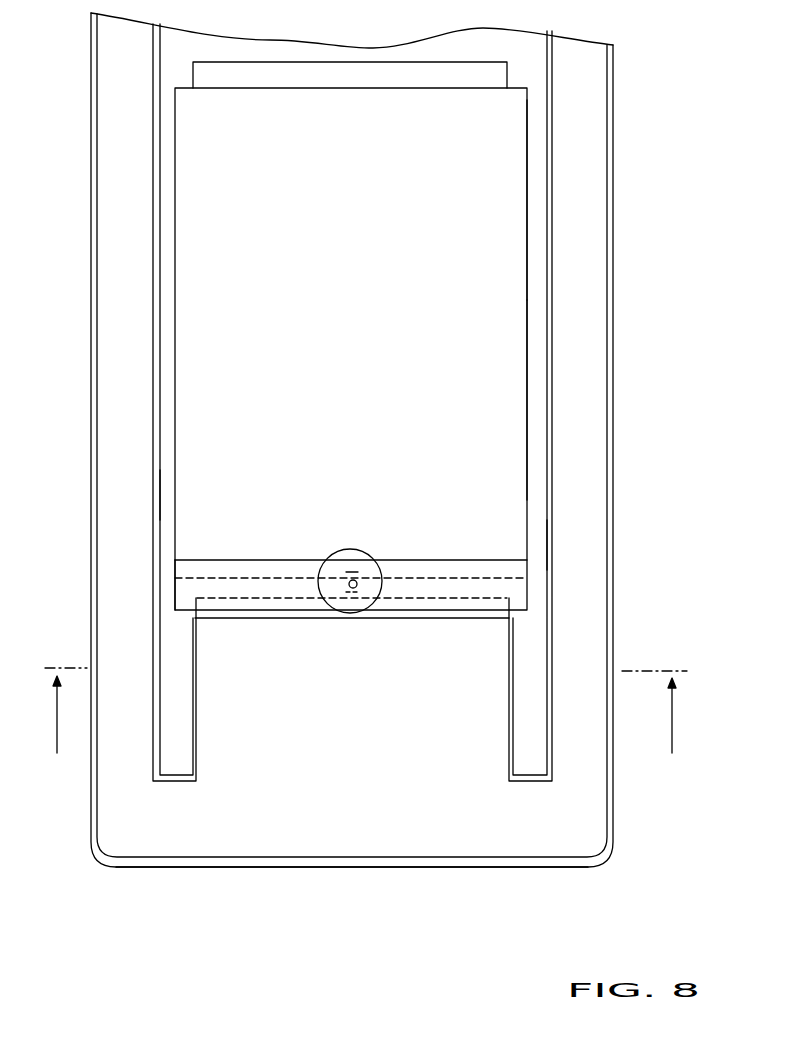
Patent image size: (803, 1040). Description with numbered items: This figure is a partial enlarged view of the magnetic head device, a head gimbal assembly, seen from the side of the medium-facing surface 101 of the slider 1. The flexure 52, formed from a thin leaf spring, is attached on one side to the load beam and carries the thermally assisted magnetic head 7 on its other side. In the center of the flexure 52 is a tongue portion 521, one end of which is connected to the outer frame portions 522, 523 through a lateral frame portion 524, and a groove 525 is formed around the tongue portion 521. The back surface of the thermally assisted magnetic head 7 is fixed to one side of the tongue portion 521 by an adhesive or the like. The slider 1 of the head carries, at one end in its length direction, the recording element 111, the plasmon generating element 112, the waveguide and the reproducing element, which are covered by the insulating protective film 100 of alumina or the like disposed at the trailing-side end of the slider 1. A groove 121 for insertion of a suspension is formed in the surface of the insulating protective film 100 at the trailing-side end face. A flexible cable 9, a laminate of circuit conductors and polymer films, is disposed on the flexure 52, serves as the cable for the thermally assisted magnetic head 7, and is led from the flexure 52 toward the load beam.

The flexure 52 is at (78, 66).
The tongue portion 521 is at (477, 67).
The outer frame portion 522 is at (613, 406).
The outer frame portion 523 is at (90, 410).
The lateral frame portion 524 is at (328, 868).
The groove 525 is at (165, 495).
The slider 1 is at (527, 202).
The medium-facing surface 101 is at (505, 143).
The thermally assisted magnetic head 7 is at (534, 376).
The insulating protective film 100 is at (525, 588).
The groove 121 is at (204, 576).
The recording element 111 is at (372, 553).
The plasmon generating element 112 is at (353, 584).
The flexible cable 9 is at (100, 167).